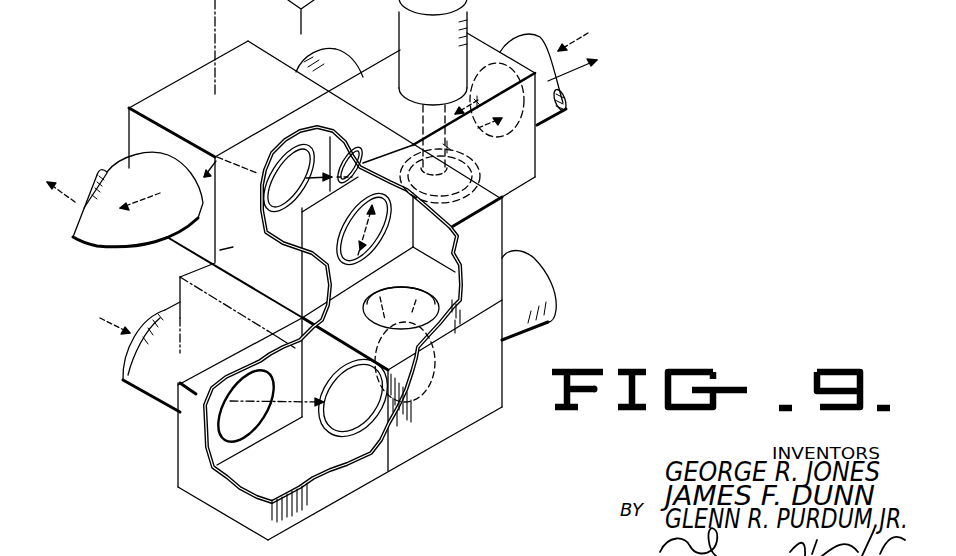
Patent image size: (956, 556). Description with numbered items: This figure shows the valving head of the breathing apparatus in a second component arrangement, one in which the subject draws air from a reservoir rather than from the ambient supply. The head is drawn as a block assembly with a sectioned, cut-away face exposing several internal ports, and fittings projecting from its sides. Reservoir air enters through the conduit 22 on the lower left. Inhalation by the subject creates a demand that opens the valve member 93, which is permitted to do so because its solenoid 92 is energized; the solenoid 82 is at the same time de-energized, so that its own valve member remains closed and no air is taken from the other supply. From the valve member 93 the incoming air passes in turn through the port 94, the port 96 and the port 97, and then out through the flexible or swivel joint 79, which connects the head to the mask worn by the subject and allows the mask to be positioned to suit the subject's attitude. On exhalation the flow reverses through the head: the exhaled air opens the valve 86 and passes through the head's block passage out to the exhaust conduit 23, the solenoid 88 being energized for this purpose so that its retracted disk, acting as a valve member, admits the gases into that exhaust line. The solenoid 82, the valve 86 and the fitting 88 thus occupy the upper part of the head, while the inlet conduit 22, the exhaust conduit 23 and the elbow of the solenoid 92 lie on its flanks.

The conduit 22 is at (153, 387).
The exhaust conduit 23 is at (117, 238).
The flexible or swivel joint 79 is at (540, 45).
The solenoid 82 is at (442, 74).
The valve 86 is at (304, 135).
The solenoid 88 is at (339, 50).
The solenoid 92 is at (537, 279).
The valve member 93 is at (347, 402).
The port 94 is at (416, 284).
The port 96 is at (393, 233).
The port 97 is at (369, 146).